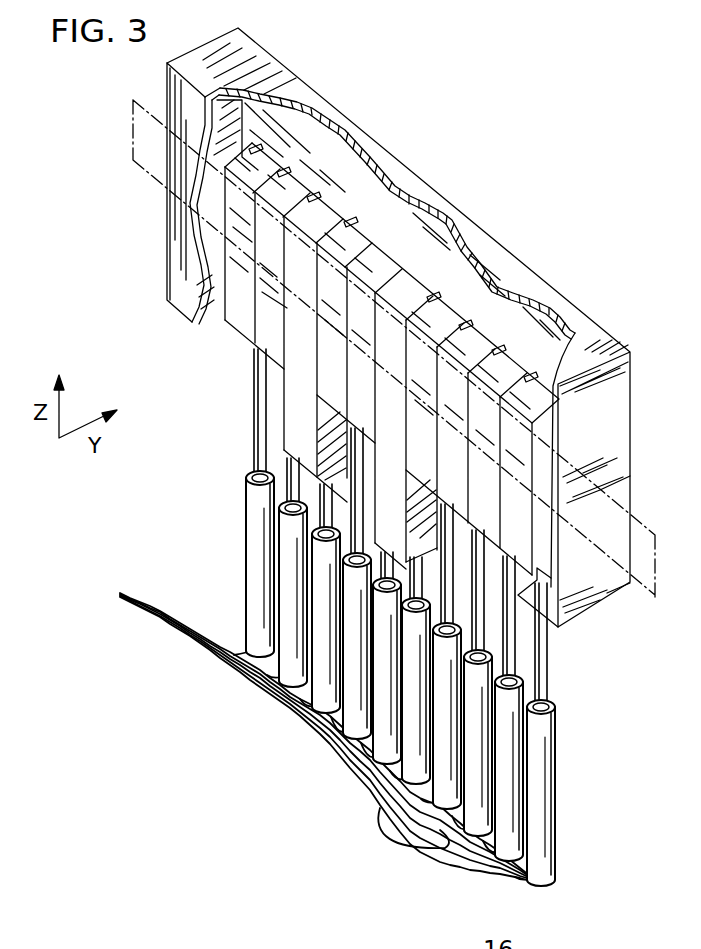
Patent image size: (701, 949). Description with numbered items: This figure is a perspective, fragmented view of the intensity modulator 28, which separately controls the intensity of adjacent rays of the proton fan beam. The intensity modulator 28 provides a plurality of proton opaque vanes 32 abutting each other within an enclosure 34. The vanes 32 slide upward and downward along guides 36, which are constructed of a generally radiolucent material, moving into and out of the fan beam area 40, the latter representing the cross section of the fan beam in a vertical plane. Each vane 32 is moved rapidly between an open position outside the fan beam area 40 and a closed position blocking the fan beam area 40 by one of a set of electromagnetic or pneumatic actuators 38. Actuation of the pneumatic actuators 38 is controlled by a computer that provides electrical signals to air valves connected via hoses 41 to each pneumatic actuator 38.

The intensity modulator 28 is at (277, 61).
The proton opaque vanes 32 is at (297, 196).
The enclosure 34 is at (463, 263).
The guides 36 is at (412, 222).
The actuators 38 is at (503, 757).
The fan beam area 40 is at (133, 129).
The hoses 41 is at (385, 836).